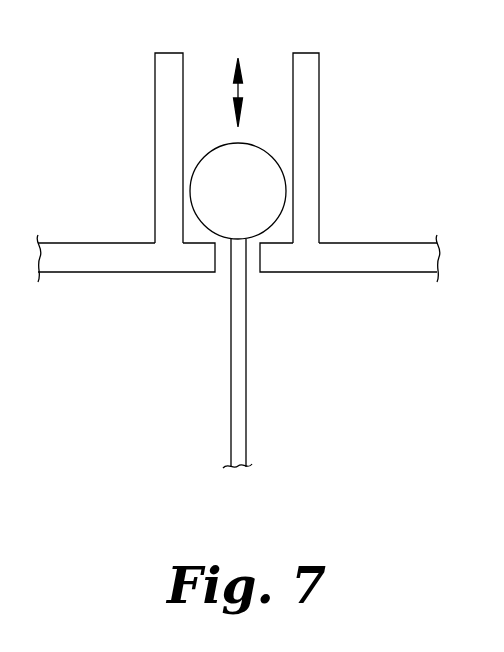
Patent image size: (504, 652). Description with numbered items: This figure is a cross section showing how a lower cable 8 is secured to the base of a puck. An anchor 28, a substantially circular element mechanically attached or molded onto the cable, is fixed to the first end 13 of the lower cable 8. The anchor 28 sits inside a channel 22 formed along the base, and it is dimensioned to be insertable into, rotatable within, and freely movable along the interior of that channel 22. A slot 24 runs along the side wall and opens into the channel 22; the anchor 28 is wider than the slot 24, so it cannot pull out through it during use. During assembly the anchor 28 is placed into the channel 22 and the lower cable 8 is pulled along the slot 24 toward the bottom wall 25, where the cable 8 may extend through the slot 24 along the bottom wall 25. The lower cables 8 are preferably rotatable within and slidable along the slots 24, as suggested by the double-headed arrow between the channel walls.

The channel 22 is at (319, 85).
The anchor 28 is at (277, 162).
The first end 13 is at (238, 240).
The bottom wall 25 is at (187, 272).
The slot 24 is at (225, 272).
The lower cable 8 is at (246, 405).